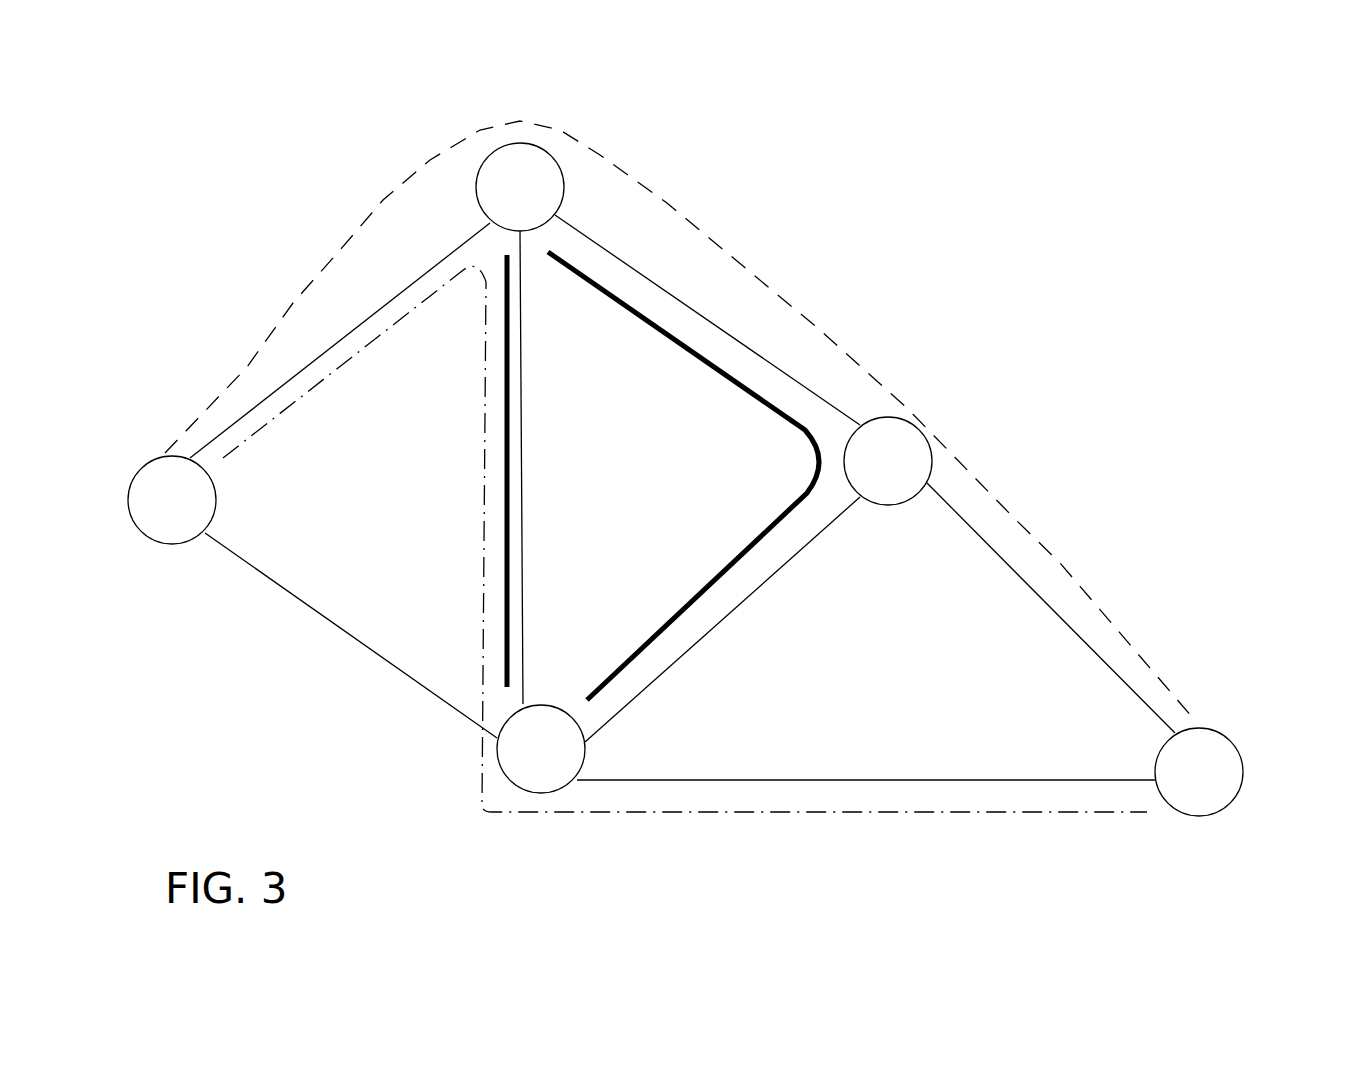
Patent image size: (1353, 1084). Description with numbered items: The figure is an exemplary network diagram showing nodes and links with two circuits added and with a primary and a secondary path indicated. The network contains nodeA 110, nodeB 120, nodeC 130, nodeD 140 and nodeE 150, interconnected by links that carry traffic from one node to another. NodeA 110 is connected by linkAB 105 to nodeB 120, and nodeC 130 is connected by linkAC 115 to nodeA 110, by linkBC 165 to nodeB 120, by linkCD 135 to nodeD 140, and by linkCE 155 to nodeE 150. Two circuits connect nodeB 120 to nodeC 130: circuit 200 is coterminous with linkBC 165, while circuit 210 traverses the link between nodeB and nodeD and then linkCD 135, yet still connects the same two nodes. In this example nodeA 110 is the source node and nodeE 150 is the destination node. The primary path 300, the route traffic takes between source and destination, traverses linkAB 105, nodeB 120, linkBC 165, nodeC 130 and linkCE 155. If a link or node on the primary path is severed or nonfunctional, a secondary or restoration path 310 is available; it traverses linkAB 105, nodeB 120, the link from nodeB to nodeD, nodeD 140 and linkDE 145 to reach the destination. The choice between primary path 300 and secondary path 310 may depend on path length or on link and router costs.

The linkAB 105 is at (330, 347).
The nodeA 110 is at (128, 487).
The linkAC 115 is at (347, 633).
The nodeB 120 is at (520, 143).
The nodeC 130 is at (543, 793).
The linkCD 135 is at (728, 617).
The nodeD 140 is at (915, 427).
The linkDE 145 is at (1068, 628).
The nodeE 150 is at (1243, 772).
The linkCE 155 is at (840, 781).
The linkBC 165 is at (527, 453).
The circuit 200 is at (505, 453).
The circuit 210 is at (737, 572).
The primary path 300 is at (485, 807).
The secondary path 310 is at (1018, 507).